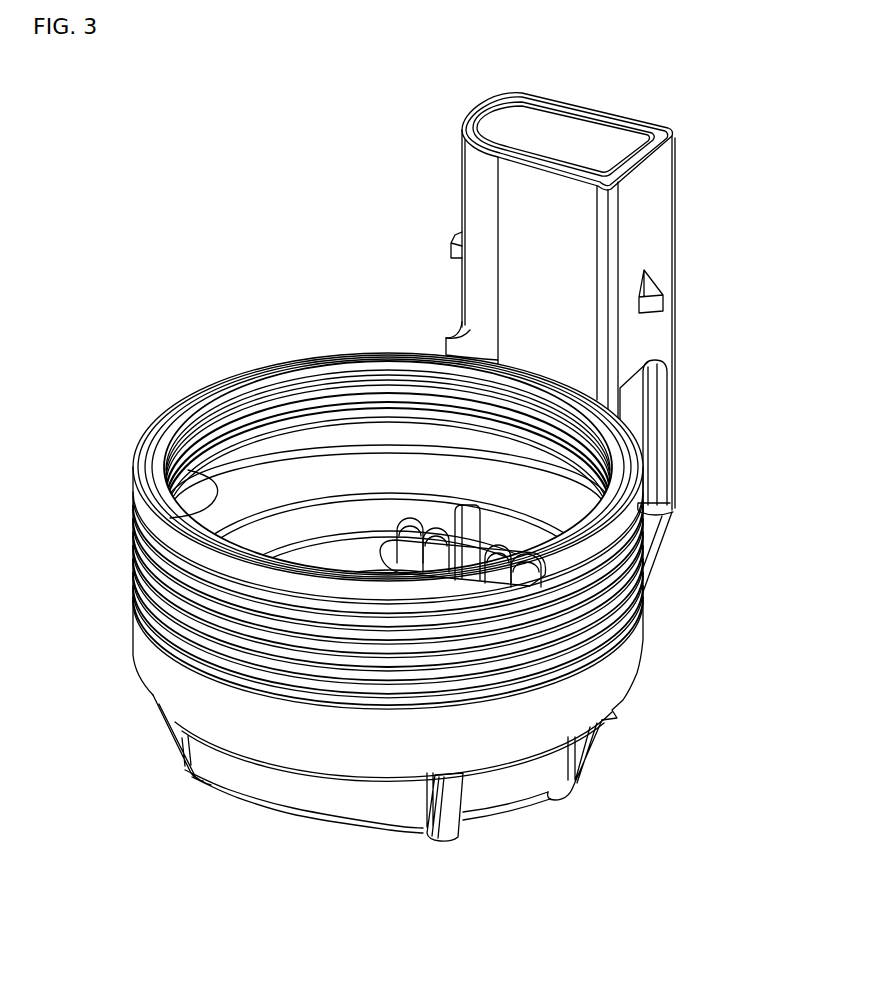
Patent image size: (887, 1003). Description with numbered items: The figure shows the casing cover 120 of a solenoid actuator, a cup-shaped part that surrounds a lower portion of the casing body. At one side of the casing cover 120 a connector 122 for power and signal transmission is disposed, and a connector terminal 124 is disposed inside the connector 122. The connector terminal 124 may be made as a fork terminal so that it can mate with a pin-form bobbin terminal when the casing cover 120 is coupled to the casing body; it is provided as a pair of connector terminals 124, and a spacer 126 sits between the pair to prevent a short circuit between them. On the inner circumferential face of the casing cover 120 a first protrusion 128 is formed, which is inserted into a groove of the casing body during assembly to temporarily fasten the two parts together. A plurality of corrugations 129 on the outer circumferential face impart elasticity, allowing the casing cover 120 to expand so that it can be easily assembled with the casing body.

The casing cover 120 is at (203, 252).
The connector 122 is at (673, 227).
The connector terminal 124 is at (438, 552).
The spacer 126 is at (478, 533).
The first protrusion 128 is at (167, 515).
The corrugation 129 is at (302, 653).